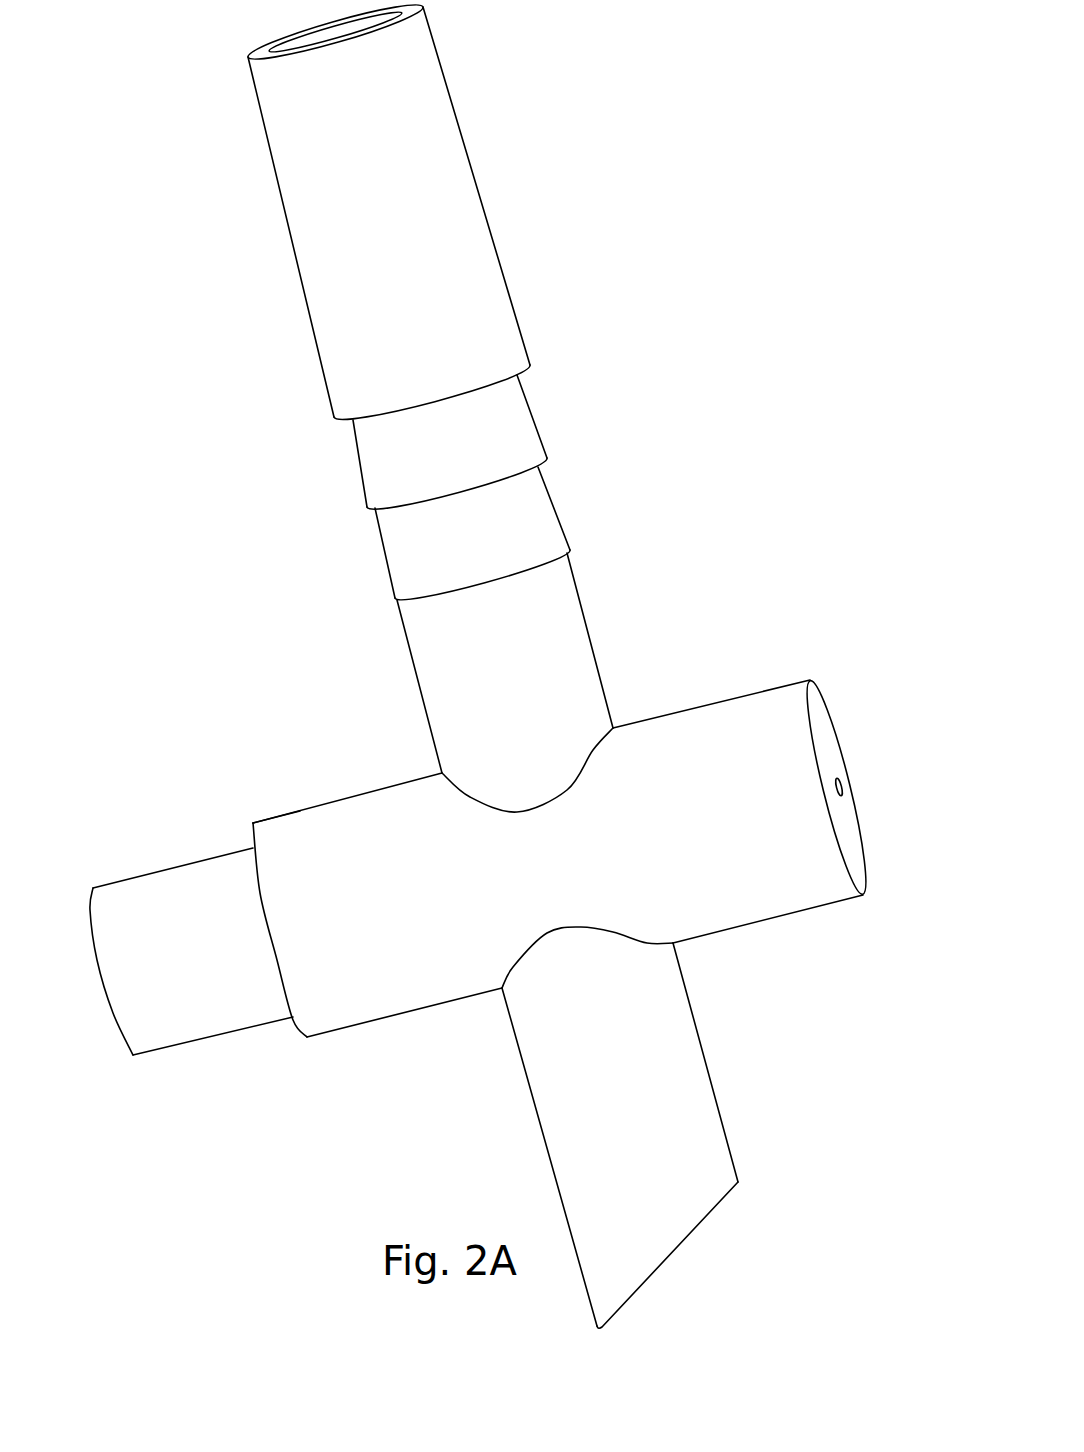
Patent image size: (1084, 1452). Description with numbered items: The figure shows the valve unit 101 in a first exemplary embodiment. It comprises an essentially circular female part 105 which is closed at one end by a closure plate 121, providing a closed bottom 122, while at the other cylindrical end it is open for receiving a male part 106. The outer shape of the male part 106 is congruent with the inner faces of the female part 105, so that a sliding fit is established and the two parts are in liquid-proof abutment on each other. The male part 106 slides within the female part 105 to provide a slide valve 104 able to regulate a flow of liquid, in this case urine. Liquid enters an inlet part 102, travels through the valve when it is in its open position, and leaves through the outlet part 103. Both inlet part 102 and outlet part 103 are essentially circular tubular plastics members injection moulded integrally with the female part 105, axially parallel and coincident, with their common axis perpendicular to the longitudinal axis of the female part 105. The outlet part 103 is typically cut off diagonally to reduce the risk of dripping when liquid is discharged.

The valve unit 101 is at (652, 224).
The inlet part 102 is at (592, 643).
The outlet part 103 is at (665, 1032).
The slide valve 104 is at (208, 878).
The female part 105 is at (760, 722).
The male part 106 is at (178, 1025).
The closure plate 121 is at (832, 746).
The closed bottom 122 is at (884, 638).